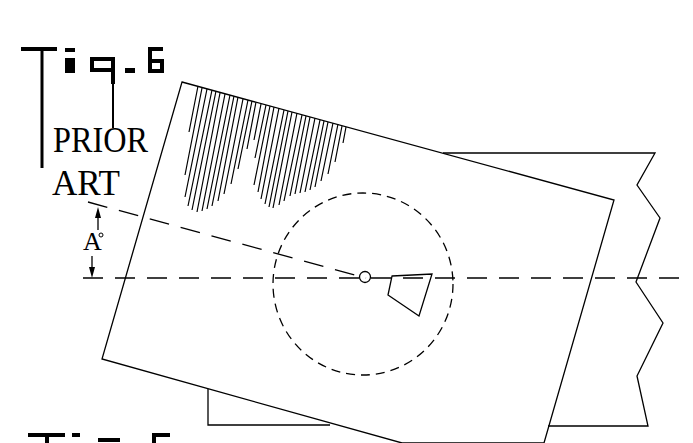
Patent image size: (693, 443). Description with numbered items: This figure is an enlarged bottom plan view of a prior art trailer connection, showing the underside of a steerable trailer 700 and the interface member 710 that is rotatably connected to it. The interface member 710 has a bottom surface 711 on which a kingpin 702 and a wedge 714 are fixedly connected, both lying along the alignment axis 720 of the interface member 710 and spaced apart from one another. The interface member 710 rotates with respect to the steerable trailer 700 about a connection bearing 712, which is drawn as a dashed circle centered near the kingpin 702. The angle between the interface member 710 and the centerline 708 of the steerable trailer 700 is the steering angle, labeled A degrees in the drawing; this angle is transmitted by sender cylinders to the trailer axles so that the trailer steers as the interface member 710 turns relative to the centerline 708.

The steerable trailer 700 is at (608, 181).
The kingpin 702 is at (370, 273).
The centerline 708 is at (160, 280).
The interface member 710 is at (175, 345).
The bottom surface 711 is at (514, 366).
The connection bearing 712 is at (364, 193).
The wedge 714 is at (416, 286).
The alignment axis 720 is at (165, 223).